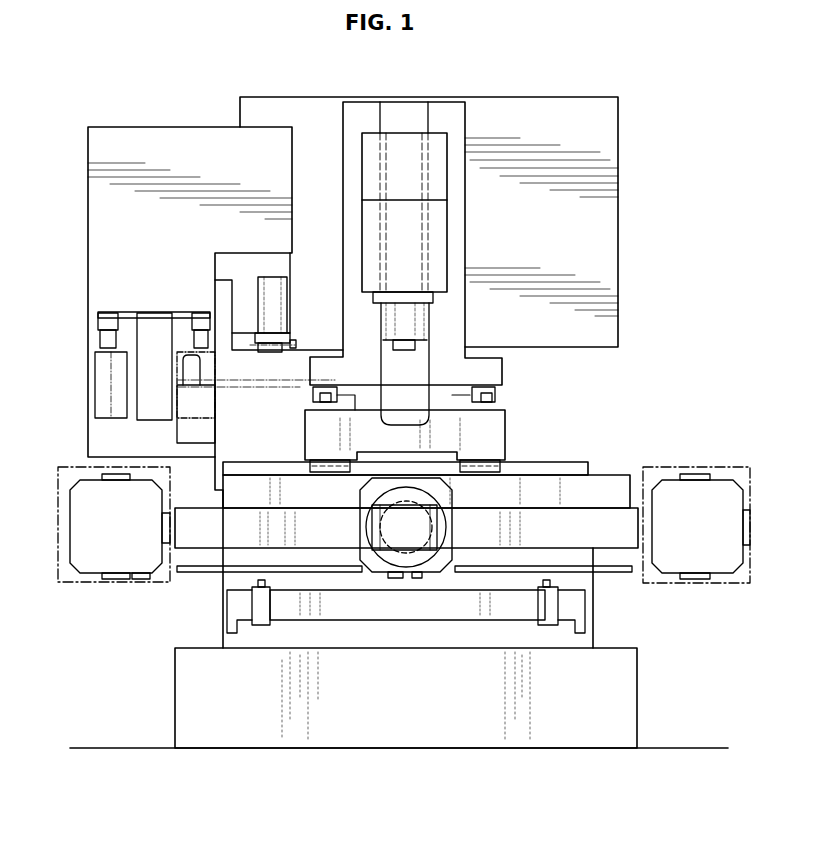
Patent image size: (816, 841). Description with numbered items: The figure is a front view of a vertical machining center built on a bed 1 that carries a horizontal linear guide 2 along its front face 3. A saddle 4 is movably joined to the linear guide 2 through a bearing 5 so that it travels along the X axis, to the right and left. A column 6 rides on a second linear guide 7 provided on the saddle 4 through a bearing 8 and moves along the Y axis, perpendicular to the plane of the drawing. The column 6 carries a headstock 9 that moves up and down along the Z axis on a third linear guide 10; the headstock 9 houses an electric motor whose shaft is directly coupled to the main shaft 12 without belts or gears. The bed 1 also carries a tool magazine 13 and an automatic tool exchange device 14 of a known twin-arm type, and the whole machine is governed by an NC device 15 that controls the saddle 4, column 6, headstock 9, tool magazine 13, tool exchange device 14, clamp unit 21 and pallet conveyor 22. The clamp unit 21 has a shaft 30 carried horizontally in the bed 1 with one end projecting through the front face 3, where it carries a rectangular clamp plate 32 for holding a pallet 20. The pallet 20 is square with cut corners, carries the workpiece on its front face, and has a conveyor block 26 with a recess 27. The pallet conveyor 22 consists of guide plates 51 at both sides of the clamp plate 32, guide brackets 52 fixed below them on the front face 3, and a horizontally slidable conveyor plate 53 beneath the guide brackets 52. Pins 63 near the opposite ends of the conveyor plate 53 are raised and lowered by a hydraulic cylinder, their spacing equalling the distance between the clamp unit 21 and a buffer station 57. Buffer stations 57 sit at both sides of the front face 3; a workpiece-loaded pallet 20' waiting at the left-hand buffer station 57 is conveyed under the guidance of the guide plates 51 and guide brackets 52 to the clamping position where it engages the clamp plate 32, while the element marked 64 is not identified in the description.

The bed 1 is at (620, 684).
The horizontal linear guide 2 is at (588, 465).
The front face of the bed 3 is at (560, 462).
The saddle 4 is at (490, 437).
The bearing 5 is at (312, 472).
The column 6 is at (455, 255).
The second linear guide 7 is at (325, 404).
The bearing 8 is at (313, 397).
The headstock 9 is at (440, 215).
The third linear guide 10 is at (380, 355).
The main shaft 12 is at (404, 352).
The tool magazine 13 is at (158, 322).
The automatic tool exchange device 14 is at (292, 342).
The NC device 15 is at (610, 232).
The pallet 20 is at (592, 578).
The workpiece-loaded pallet 20' is at (107, 560).
The clamp unit 21 is at (380, 580).
The pallet conveyor 22 is at (517, 637).
The conveyor block 26 is at (418, 578).
The recess 27 is at (396, 578).
The shaft 30 is at (362, 516).
The clamp plate 32 is at (372, 528).
The guide plates 51 is at (250, 522).
The guide brackets 52 is at (237, 567).
The conveyor plate 53 is at (490, 610).
The buffer stations 57 is at (74, 467).
The pins 63 is at (252, 605).
The guide bar 64 is at (232, 575).